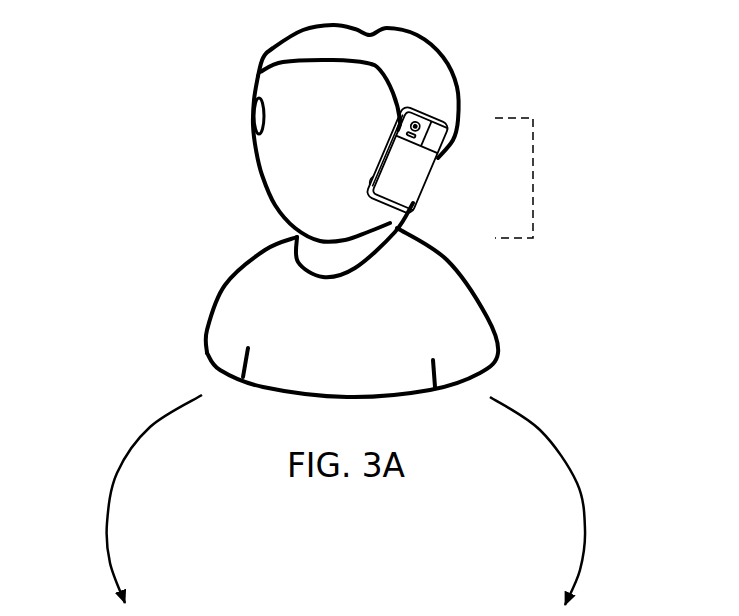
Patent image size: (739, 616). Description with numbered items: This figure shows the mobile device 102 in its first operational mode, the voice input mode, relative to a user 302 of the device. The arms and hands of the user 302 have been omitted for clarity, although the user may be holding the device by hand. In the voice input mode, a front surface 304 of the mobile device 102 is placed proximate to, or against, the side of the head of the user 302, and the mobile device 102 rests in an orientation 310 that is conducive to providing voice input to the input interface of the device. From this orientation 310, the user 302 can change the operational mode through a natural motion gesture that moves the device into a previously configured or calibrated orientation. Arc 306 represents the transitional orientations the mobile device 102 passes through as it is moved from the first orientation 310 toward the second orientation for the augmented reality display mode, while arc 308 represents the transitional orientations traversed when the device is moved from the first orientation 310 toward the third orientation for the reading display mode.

The user 302 is at (445, 60).
The front surface 304 is at (373, 167).
The mobile device 102 is at (425, 183).
The orientation 310 is at (537, 177).
The arc 306 is at (107, 492).
The arc 308 is at (580, 490).